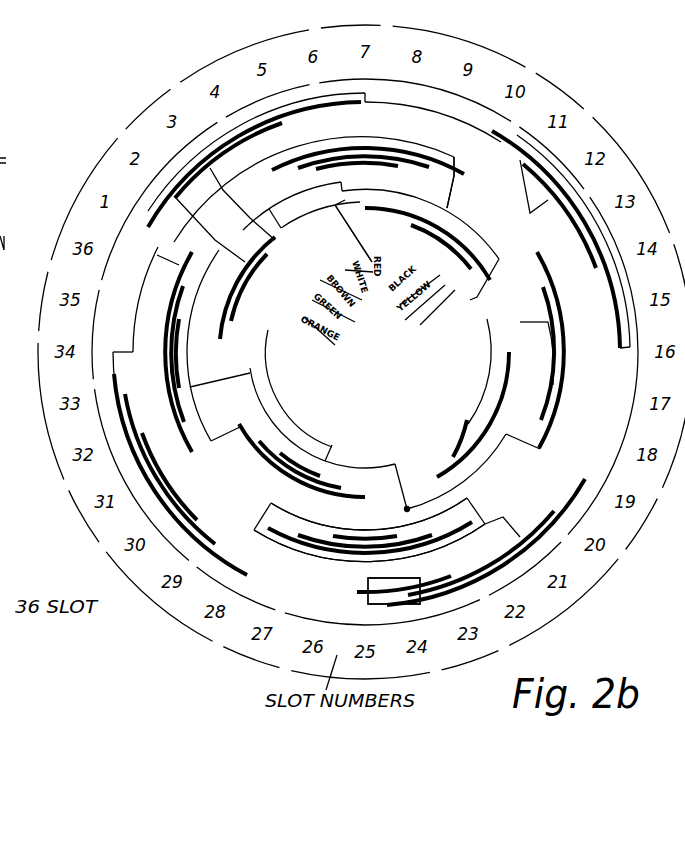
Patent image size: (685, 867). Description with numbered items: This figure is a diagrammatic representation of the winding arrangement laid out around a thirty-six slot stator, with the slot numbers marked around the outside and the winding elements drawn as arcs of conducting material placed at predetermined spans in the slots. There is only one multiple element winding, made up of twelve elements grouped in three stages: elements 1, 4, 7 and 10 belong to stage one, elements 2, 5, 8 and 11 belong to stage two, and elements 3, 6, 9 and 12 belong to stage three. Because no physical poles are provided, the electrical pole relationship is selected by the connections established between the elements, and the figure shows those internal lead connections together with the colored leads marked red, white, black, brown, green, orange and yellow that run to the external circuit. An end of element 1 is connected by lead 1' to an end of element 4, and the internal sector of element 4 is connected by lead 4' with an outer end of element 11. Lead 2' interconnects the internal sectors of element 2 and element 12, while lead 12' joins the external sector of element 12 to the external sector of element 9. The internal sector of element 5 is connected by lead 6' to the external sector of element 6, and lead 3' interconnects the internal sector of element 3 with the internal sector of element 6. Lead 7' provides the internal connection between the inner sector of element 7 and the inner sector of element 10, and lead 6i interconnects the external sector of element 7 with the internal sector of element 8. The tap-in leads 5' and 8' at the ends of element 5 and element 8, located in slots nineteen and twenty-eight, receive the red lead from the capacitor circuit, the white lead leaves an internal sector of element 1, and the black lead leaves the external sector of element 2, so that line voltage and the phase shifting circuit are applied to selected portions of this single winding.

The element 1 is at (254, 162).
The lead 1' is at (433, 117).
The element 2 is at (368, 170).
The lead 2' is at (353, 224).
The element 3 is at (427, 238).
The lead 3' is at (470, 371).
The element 4 is at (561, 239).
The lead 4' is at (459, 168).
The element 5 is at (558, 350).
The tap-in lead 5' is at (456, 471).
The element 6 is at (473, 414).
The lead 6' is at (531, 338).
The lead 6i is at (418, 578).
The element 7 is at (471, 542).
The lead 7' is at (369, 556).
The element 8 is at (370, 535).
The tap-in lead 8' is at (369, 516).
The element 9 is at (302, 460).
The element 10 is at (180, 474).
The element 11 is at (167, 352).
The element 12 is at (252, 288).
The lead 12' is at (184, 299).